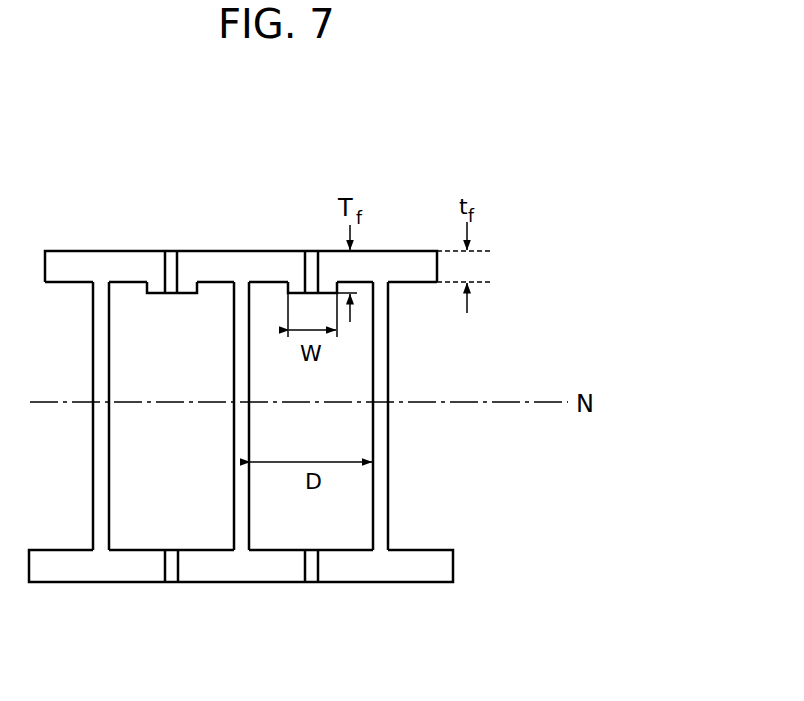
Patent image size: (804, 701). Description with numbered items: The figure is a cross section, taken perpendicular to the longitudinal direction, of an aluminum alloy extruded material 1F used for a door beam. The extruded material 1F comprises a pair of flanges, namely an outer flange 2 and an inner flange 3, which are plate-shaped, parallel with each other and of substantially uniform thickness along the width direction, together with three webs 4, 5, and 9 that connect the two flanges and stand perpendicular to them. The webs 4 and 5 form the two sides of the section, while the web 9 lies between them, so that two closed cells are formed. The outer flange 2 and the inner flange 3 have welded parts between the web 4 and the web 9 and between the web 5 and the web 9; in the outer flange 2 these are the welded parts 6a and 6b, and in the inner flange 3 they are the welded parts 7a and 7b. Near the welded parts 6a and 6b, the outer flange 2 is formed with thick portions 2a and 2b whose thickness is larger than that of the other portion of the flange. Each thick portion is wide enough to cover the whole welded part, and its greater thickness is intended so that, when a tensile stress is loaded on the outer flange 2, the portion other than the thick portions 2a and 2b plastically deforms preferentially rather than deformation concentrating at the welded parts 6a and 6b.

The aluminum alloy extruded material 1F is at (437, 150).
The outer flange 2 is at (73, 238).
The thick portion 2a is at (148, 293).
The thick portion 2b is at (290, 294).
The inner flange 3 is at (75, 589).
The web 4 is at (81, 426).
The web 5 is at (404, 451).
The welded part 6a is at (165, 262).
The welded part 6b is at (305, 262).
The welded part 7a is at (171, 574).
The welded part 7b is at (311, 574).
The web 9 is at (222, 428).